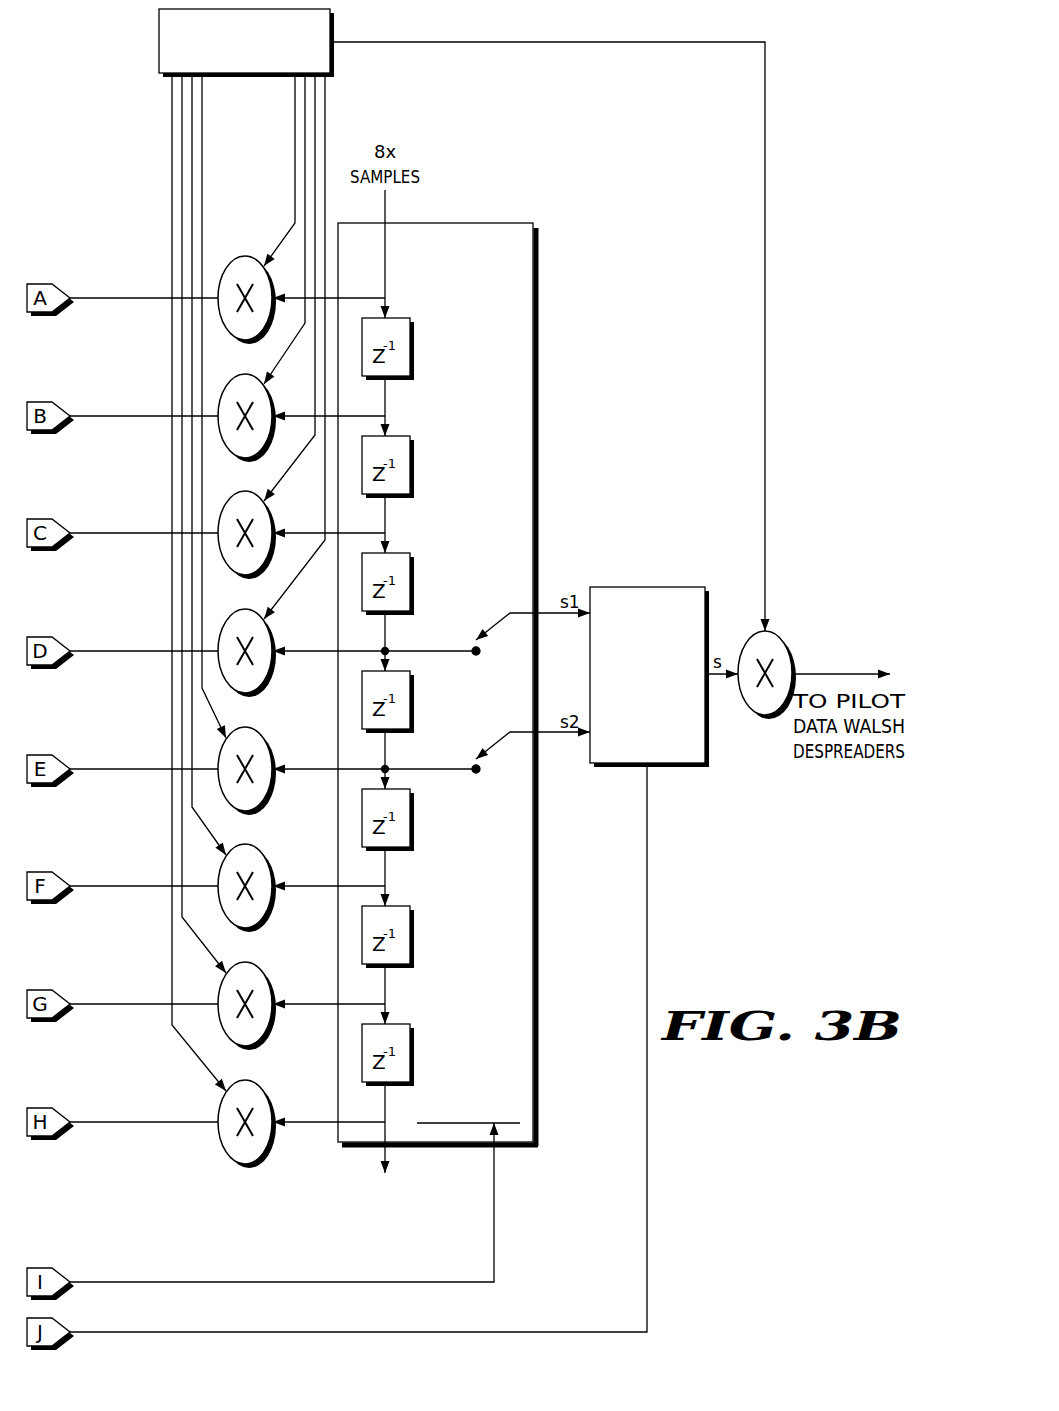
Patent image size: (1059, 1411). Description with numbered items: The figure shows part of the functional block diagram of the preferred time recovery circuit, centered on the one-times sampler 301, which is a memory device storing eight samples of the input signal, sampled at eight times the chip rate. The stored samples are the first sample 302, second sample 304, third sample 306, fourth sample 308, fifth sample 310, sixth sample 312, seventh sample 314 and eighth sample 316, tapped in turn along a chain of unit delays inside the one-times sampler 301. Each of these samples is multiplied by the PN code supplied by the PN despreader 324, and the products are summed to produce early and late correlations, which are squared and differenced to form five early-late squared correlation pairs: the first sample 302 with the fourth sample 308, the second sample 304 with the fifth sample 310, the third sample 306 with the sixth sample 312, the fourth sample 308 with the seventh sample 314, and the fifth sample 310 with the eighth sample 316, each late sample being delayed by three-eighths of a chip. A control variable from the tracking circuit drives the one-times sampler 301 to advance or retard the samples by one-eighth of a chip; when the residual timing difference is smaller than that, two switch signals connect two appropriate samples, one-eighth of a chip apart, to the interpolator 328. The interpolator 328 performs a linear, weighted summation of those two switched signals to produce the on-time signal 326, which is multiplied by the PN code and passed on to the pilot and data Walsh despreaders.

The 1× sampler 301 is at (538, 338).
The first sample 302 is at (387, 274).
The second sample 304 is at (387, 392).
The third sample 306 is at (387, 509).
The fourth sample 308 is at (387, 627).
The fifth sample 310 is at (387, 745).
The sixth sample 312 is at (387, 862).
The seventh sample 314 is at (387, 980).
The eighth sample 316 is at (388, 1108).
The PN despreader 324 is at (333, 63).
The on-time signal 326 is at (520, 43).
The interpolator 328 is at (643, 585).